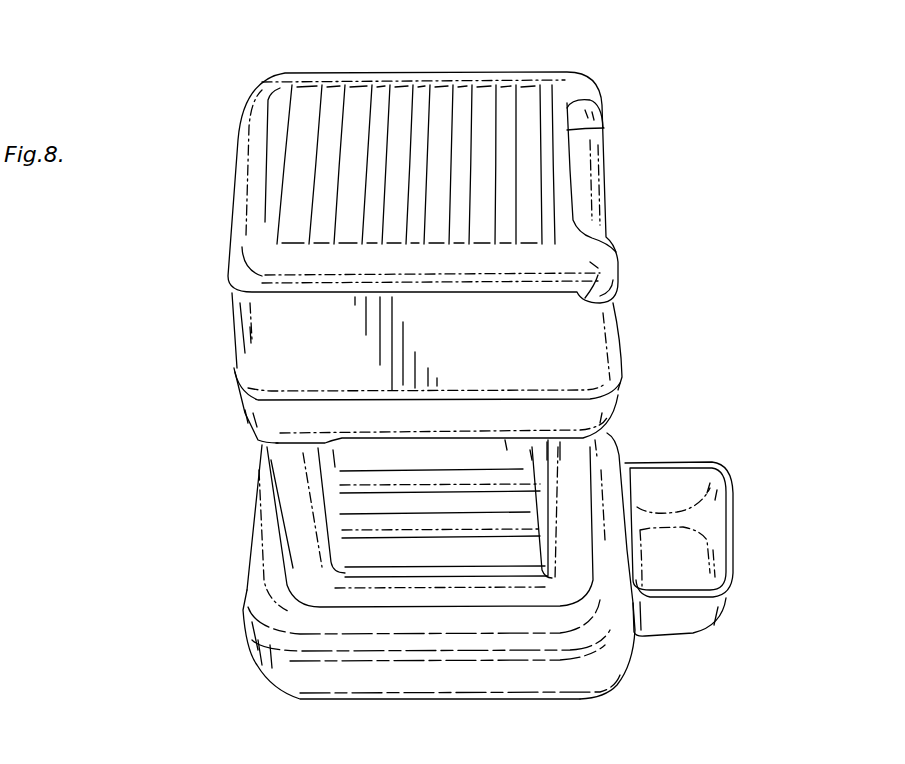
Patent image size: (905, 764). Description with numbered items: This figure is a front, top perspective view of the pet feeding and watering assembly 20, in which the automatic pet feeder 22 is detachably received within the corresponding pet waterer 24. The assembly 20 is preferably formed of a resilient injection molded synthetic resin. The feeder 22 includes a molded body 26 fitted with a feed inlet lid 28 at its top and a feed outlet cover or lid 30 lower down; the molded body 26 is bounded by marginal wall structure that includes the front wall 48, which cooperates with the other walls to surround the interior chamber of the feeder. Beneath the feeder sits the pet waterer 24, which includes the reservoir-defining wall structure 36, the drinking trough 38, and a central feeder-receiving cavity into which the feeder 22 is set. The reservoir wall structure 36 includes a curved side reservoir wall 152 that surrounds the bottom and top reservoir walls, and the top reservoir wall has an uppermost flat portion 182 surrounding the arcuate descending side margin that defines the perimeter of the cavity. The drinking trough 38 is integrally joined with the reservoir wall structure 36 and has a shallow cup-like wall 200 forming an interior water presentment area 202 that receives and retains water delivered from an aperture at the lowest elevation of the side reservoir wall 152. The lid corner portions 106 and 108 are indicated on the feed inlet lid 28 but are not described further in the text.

The pet feeding and watering assembly 20 is at (668, 293).
The automatic pet feeder 22 is at (238, 403).
The pet waterer 24 is at (606, 702).
The molded body 26 is at (583, 490).
The feed inlet lid 28 is at (528, 82).
The feed outlet cover or lid 30 is at (505, 450).
The reservoir-defining wall structure 36 is at (552, 673).
The drinking trough 38 is at (695, 560).
The front wall 48 is at (285, 468).
The lid lower corner portion 106 is at (603, 300).
The lid upper corner portion 108 is at (597, 95).
The curved side reservoir wall 152 is at (248, 548).
The uppermost flat portion 182 is at (447, 620).
The shallow cup-like wall 200 is at (694, 620).
The interior water presentment area 202 is at (686, 485).